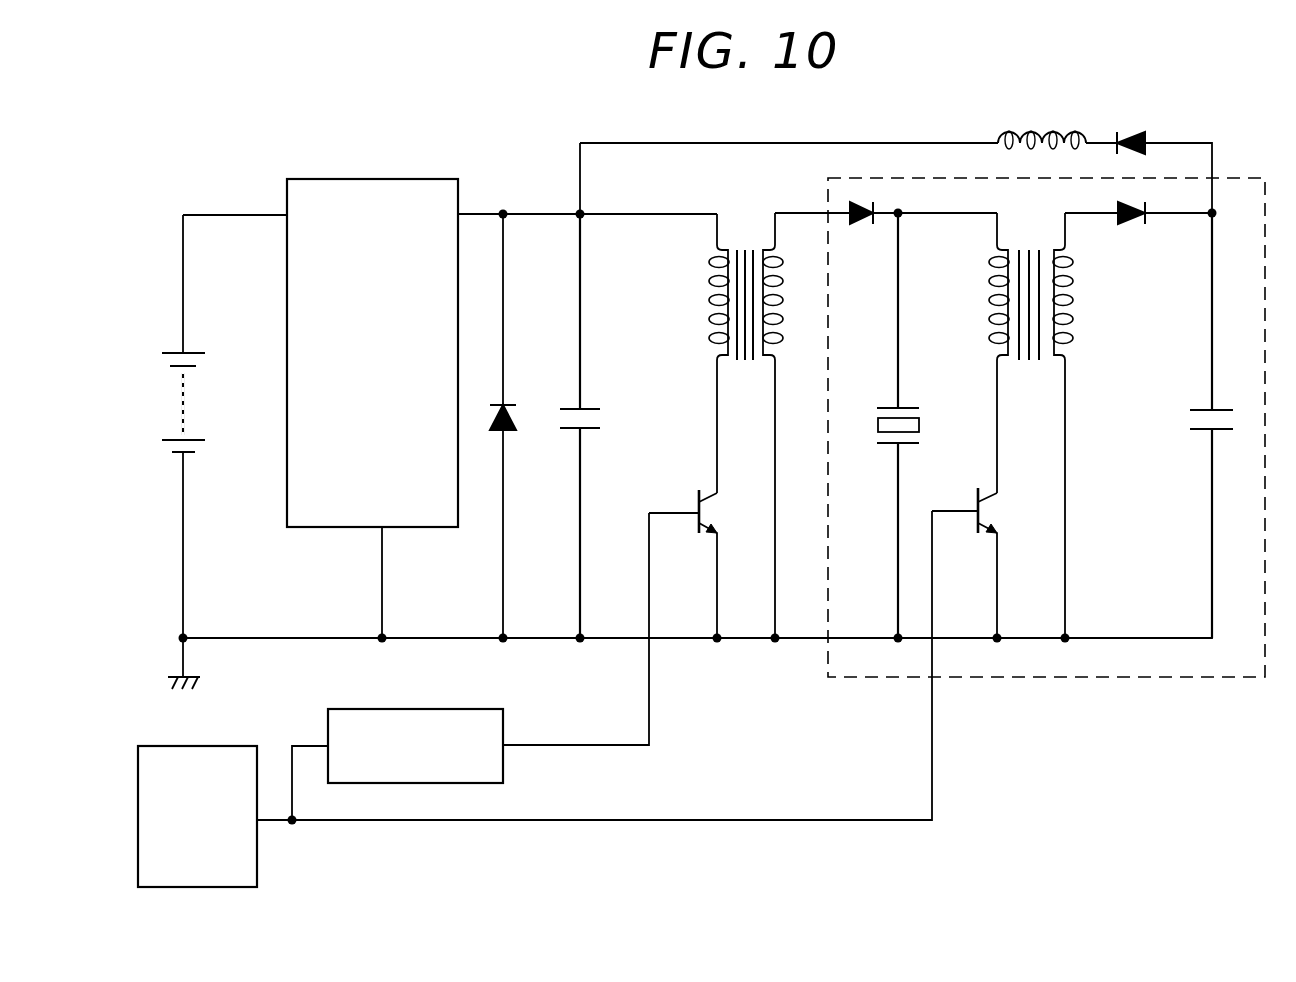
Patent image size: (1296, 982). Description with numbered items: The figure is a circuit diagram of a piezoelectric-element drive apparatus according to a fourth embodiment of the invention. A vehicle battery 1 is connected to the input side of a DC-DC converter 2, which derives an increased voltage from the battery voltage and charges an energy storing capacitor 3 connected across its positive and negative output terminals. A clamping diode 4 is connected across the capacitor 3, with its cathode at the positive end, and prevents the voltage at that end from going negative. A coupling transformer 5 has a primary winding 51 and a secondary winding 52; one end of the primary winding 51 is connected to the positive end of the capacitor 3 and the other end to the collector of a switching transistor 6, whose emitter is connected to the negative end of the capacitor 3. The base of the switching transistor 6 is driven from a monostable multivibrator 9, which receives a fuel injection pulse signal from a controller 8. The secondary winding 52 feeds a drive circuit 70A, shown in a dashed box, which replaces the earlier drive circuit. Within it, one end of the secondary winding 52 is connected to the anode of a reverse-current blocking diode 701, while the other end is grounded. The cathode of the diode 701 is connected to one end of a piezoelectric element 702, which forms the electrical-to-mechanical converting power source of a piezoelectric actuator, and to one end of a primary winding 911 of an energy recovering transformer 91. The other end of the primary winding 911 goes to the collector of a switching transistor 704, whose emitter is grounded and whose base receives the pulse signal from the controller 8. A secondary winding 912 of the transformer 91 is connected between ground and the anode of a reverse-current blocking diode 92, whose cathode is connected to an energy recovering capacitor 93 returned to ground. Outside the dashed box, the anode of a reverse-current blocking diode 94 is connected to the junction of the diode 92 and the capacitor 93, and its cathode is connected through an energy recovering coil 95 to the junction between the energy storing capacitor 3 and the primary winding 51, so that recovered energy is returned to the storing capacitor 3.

The vehicle battery 1 is at (196, 346).
The DC-DC converter 2 is at (411, 178).
The energy storing capacitor 3 is at (604, 412).
The clamping diode 4 is at (513, 411).
The coupling transformer 5 is at (751, 409).
The primary winding 51 is at (708, 270).
The secondary winding 52 is at (788, 274).
The switching transistor 6 is at (722, 506).
The controller 8 is at (217, 746).
The monostable multivibrator 9 is at (460, 709).
The drive circuit 70A is at (1236, 176).
The reverse-current blocking diode 701 is at (866, 230).
The piezoelectric element 702 is at (918, 422).
The switching transistor 704 is at (1000, 506).
The energy recovering transformer 91 is at (1038, 414).
The primary winding 911 is at (985, 305).
The secondary winding 912 is at (1075, 307).
The reverse-current blocking diode 92 is at (1128, 223).
The energy recovering capacitor 93 is at (1232, 402).
The reverse-current blocking diode 94 is at (1132, 134).
The energy recovering coil 95 is at (1053, 132).